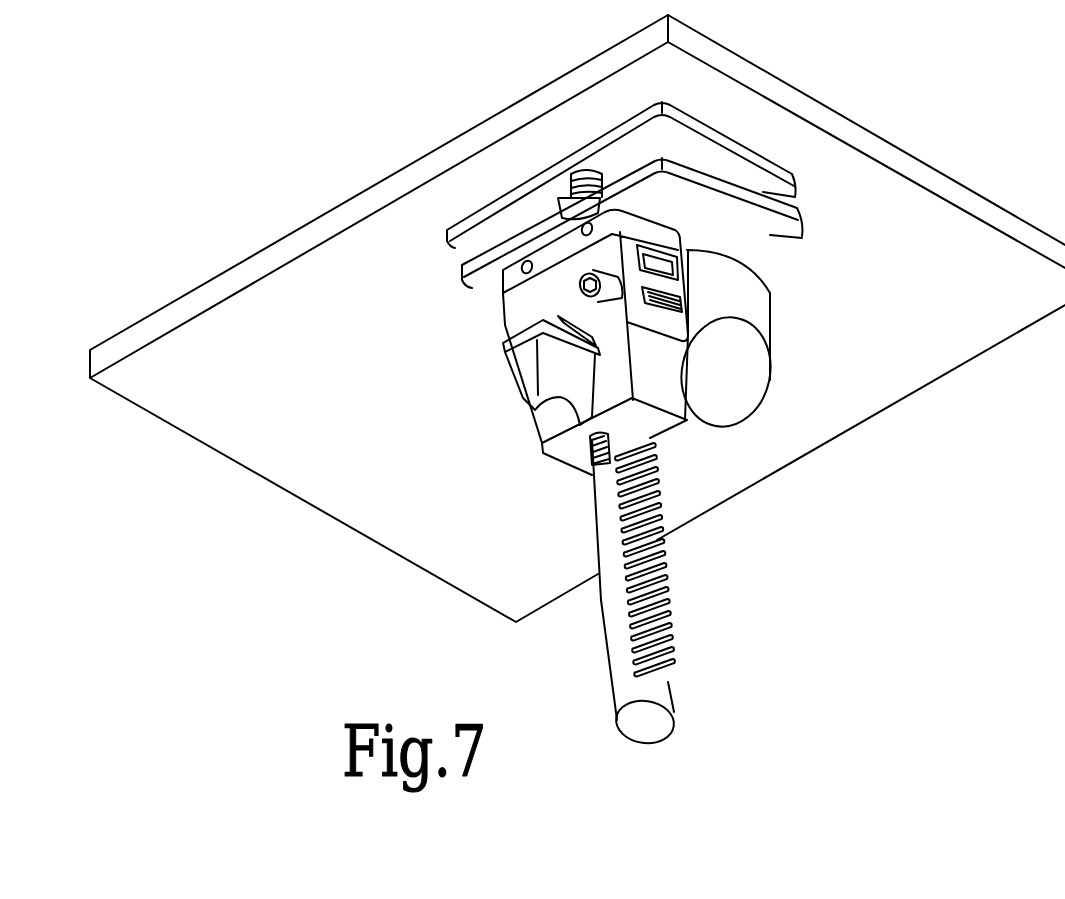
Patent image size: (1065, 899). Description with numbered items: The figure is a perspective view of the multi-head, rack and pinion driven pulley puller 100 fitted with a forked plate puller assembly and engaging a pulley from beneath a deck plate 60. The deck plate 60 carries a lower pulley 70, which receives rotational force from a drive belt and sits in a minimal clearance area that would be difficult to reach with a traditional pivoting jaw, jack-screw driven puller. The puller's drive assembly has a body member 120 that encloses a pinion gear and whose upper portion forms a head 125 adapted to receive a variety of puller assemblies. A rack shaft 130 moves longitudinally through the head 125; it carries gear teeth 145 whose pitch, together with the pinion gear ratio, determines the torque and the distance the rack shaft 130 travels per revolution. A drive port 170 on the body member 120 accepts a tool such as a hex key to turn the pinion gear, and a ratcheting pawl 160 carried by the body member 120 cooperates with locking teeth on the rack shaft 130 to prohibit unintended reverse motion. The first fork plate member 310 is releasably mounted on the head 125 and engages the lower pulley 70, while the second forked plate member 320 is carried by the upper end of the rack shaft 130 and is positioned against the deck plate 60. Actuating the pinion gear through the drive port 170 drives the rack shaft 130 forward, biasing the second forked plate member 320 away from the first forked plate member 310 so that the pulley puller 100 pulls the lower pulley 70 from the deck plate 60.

The deck plate 60 is at (900, 237).
The lower pulley 70 is at (737, 387).
The multi-head, rack and pinion driven pulley puller 100 is at (820, 715).
The body member 120 is at (663, 397).
The head 125 is at (565, 245).
The rack shaft 130 is at (646, 589).
The gear teeth 145 is at (667, 635).
The ratcheting pawl 160 is at (506, 360).
The drive port 170 is at (575, 294).
The first fork plate member 310 is at (803, 243).
The second forked plate member 320 is at (793, 200).